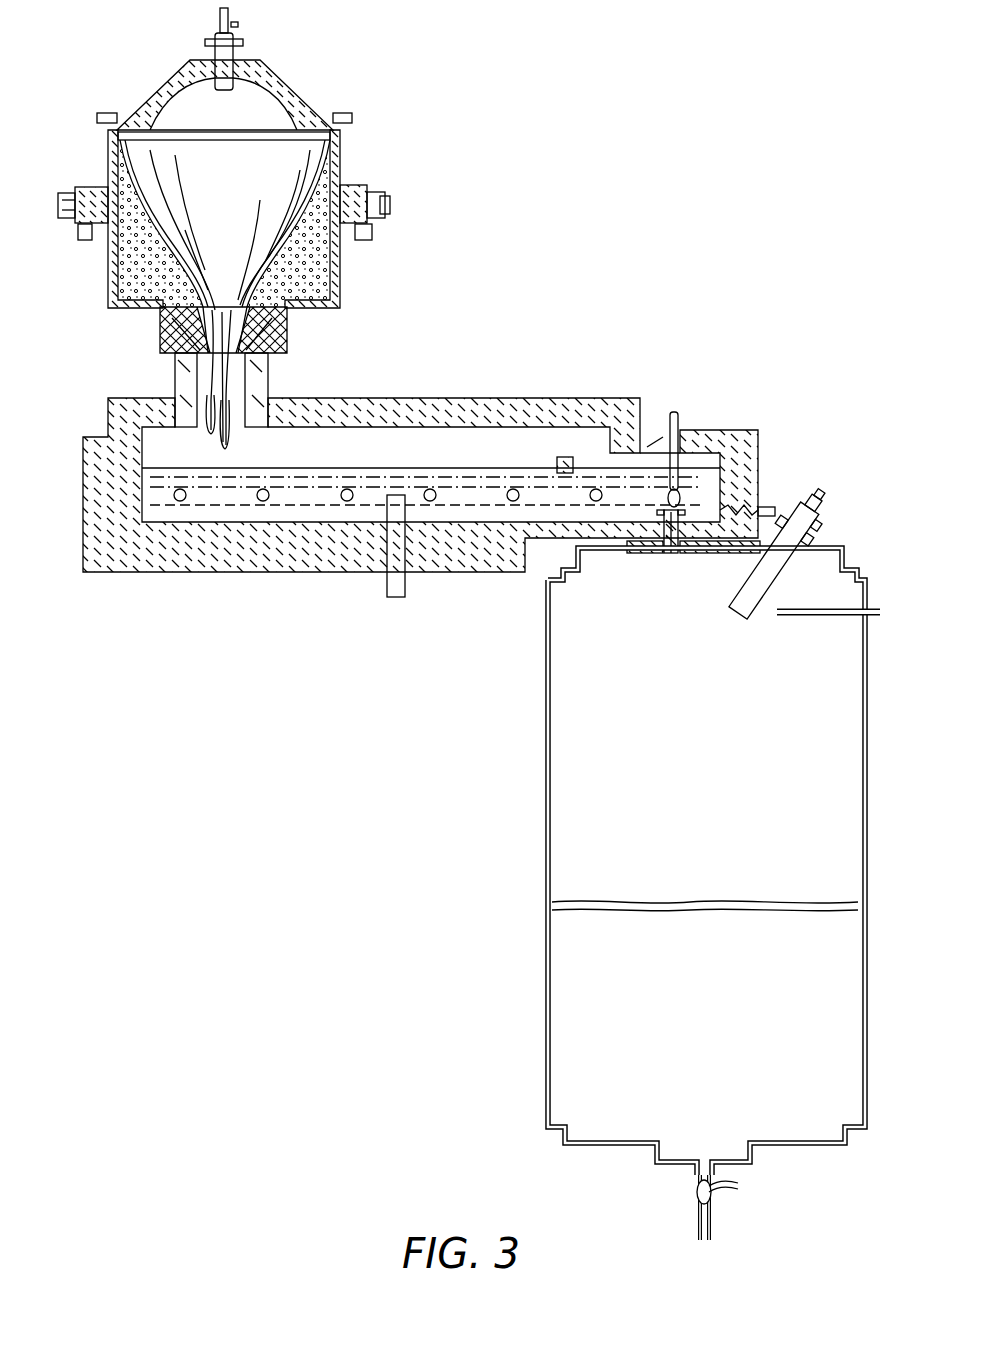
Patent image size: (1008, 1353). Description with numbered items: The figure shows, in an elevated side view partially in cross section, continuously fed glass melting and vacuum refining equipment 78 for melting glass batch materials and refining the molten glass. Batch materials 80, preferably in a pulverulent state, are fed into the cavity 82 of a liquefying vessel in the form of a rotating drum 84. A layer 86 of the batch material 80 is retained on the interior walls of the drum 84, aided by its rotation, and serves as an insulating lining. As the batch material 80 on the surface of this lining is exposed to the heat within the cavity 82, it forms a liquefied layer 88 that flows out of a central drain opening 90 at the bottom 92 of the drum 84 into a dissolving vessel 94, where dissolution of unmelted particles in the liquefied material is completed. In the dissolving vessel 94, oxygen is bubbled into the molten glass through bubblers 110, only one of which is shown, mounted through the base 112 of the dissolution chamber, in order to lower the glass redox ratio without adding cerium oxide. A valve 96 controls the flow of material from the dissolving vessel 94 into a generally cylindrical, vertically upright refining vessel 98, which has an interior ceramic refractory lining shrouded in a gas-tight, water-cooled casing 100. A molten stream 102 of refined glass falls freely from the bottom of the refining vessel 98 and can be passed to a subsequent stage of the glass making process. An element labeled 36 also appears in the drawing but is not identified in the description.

The continuously fed glass melting and vacuum refining equipment 78 is at (612, 212).
The batch materials 80 is at (112, 165).
The cavity 82 is at (275, 150).
The rotating drum 84 is at (367, 158).
The layer of batch material 86 is at (335, 255).
The liquefied layer 88 is at (270, 405).
The central drain opening 90 is at (182, 385).
The bottom 92 is at (288, 340).
The dissolving vessel 94 is at (523, 377).
The valve 96 is at (680, 414).
The valve 36 is at (682, 510).
The bubblers 110 is at (387, 586).
The base of the dissolution chamber 112 is at (150, 575).
The refining vessel 98 is at (493, 795).
The gas-tight, water-cooled casing 100 is at (548, 732).
The molten stream 102 is at (712, 1227).